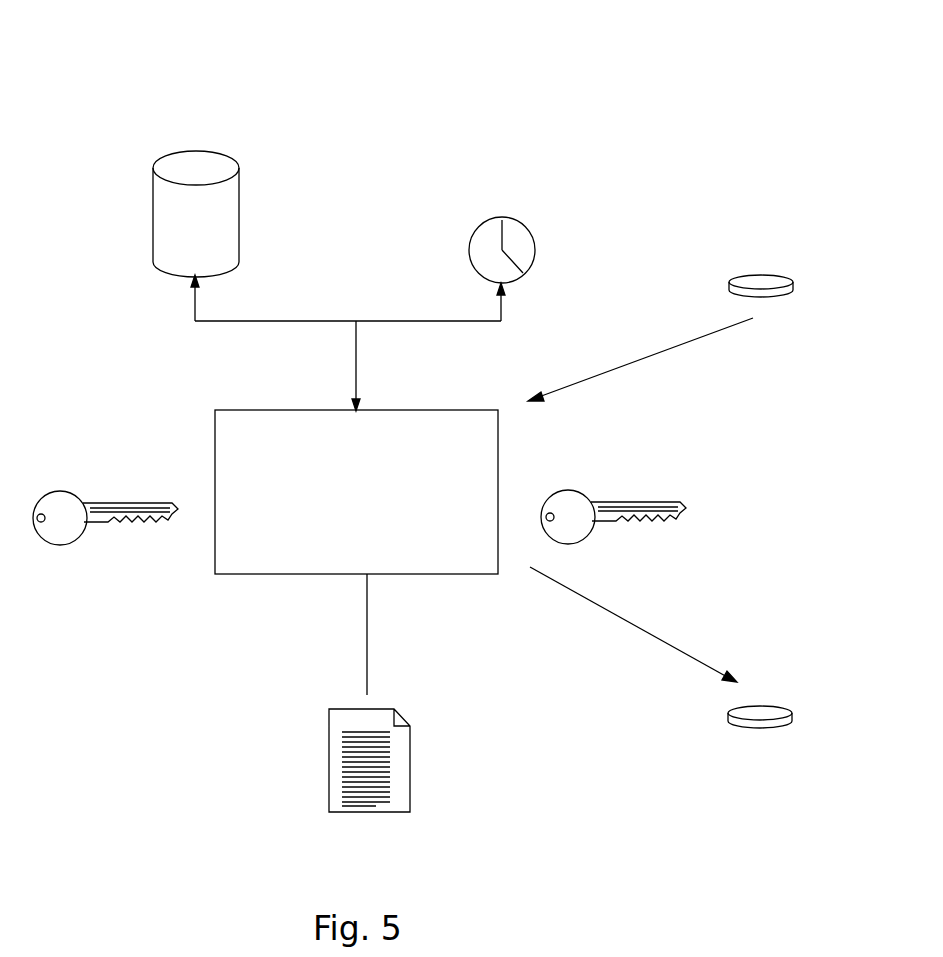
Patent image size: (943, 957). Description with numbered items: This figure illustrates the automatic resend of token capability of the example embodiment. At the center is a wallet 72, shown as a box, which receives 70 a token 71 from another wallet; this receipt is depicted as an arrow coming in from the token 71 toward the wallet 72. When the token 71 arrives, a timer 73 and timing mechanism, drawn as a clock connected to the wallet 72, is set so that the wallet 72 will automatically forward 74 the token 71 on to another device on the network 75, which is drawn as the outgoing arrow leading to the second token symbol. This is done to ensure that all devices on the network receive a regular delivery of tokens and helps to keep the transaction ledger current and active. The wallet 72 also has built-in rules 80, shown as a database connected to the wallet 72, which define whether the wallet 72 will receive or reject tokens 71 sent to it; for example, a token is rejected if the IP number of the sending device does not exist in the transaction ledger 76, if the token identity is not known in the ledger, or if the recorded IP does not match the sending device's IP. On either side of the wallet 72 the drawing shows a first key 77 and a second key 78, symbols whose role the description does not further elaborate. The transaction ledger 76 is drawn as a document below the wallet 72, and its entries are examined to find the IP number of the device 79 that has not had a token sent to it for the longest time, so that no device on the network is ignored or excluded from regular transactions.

The receipt of token 70 is at (648, 358).
The token 71 is at (777, 273).
The wallet 72 is at (215, 432).
The timer 73 is at (517, 218).
The automatic forward of token 74 is at (652, 638).
The network device 75 is at (777, 703).
The transaction ledger 76 is at (329, 758).
The first key 77 is at (117, 521).
The second key 78 is at (647, 517).
The device 79 is at (383, 765).
The rules 80 is at (150, 178).